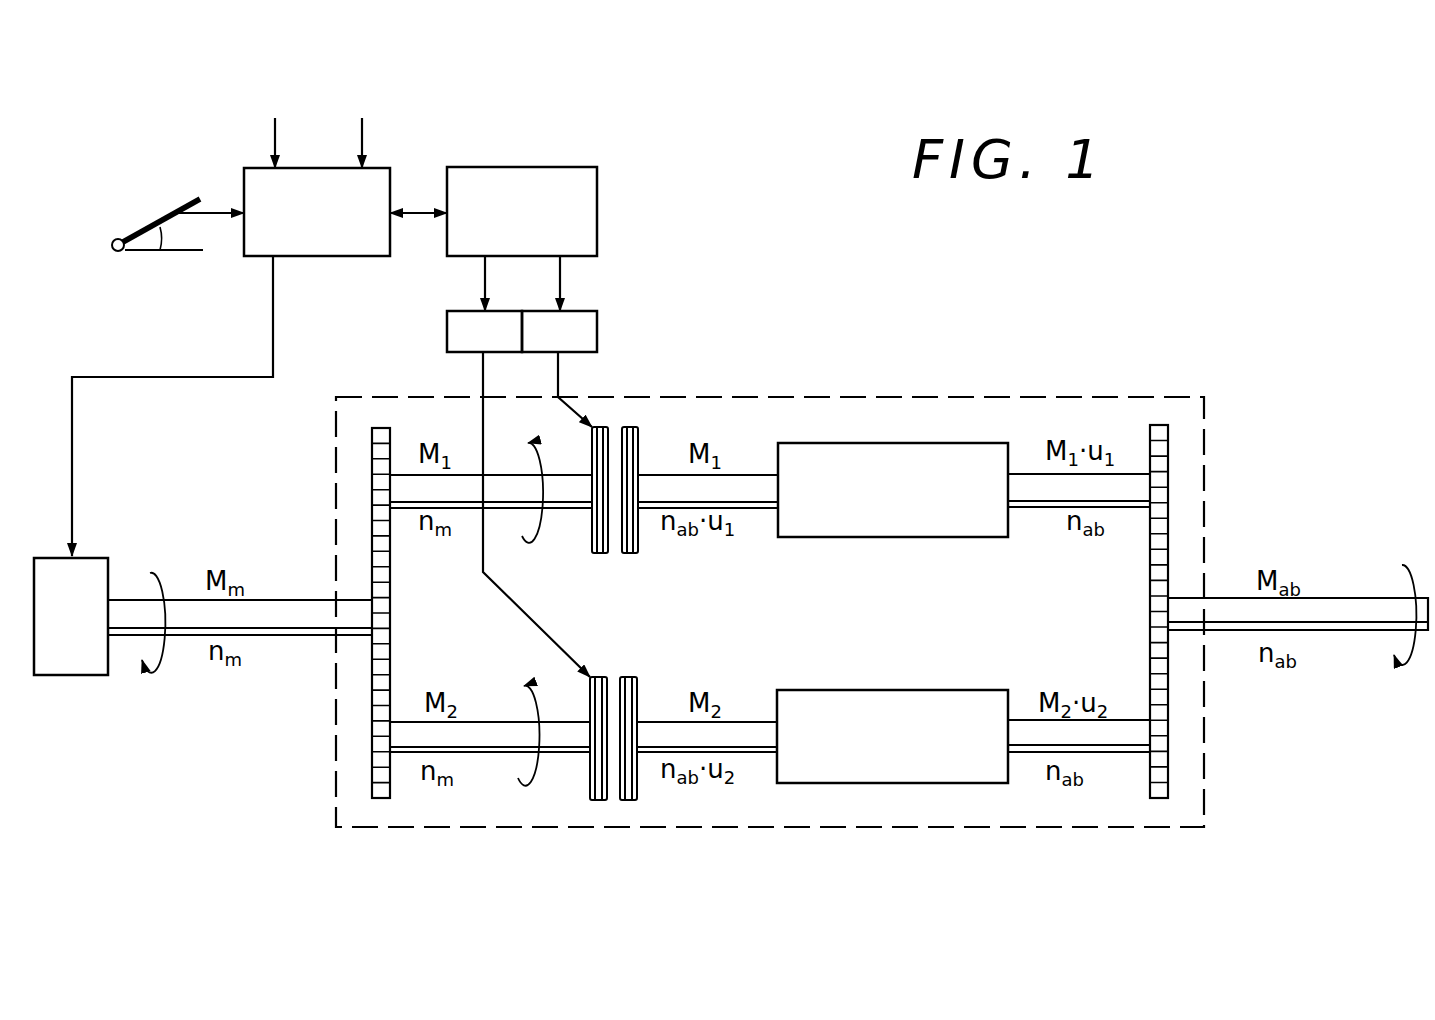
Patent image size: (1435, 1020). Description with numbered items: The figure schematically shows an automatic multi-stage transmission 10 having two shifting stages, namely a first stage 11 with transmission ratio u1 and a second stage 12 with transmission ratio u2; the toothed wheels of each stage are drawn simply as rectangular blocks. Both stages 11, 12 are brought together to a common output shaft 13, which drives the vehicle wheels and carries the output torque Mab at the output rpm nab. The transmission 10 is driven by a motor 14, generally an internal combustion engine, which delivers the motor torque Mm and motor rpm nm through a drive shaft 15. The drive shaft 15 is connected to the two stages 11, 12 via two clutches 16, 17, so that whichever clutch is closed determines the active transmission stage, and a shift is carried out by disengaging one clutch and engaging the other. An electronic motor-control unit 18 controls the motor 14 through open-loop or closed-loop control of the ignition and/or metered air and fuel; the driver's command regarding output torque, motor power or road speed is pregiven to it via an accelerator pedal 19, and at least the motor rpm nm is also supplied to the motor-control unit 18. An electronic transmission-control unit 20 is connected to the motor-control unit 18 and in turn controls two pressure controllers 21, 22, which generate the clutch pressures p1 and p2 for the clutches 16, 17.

The automatic multi-stage transmission 10 is at (336, 777).
The first stage 11 is at (957, 520).
The second stage 12 is at (967, 700).
The output shaft 13 is at (1358, 615).
The motor 14 is at (68, 660).
The drive shaft 15 is at (297, 617).
The clutch 16 is at (590, 540).
The clutch 17 is at (630, 676).
The motor-control unit 18 is at (258, 246).
The accelerator pedal 19 is at (165, 216).
The transmission-control unit 20 is at (585, 192).
The pressure controller 21 is at (585, 326).
The pressure controller 22 is at (447, 330).